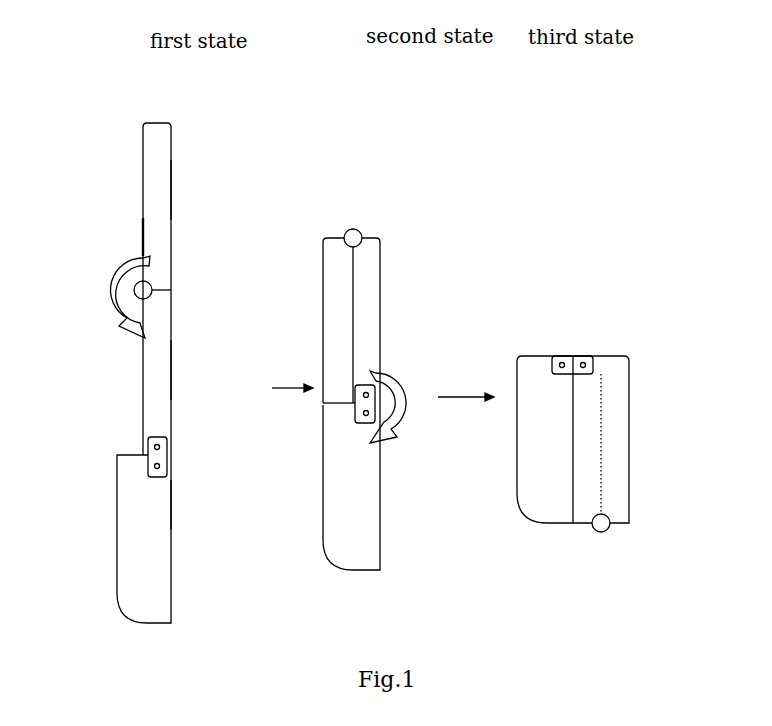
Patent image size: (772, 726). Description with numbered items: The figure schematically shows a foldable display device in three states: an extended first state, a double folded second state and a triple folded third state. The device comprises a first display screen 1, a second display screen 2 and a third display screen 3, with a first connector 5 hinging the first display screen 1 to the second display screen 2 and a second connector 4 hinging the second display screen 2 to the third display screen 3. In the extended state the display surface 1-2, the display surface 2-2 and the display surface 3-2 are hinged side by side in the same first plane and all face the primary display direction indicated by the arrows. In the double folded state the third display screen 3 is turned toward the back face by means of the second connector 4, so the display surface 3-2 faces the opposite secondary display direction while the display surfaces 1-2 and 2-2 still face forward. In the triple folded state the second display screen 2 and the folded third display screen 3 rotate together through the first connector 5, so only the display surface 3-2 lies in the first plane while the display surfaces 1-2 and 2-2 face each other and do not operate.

The first display screen 1 is at (142, 587).
The display surface of the first display screen 1-2 is at (170, 503).
The second display screen 2 is at (152, 413).
The display surface of the second display screen 2-2 is at (170, 370).
The third display screen 3 is at (152, 236).
The display surface of the third display screen 3-2 is at (172, 190).
The second connector 4 is at (140, 288).
The first connector 5 is at (148, 447).